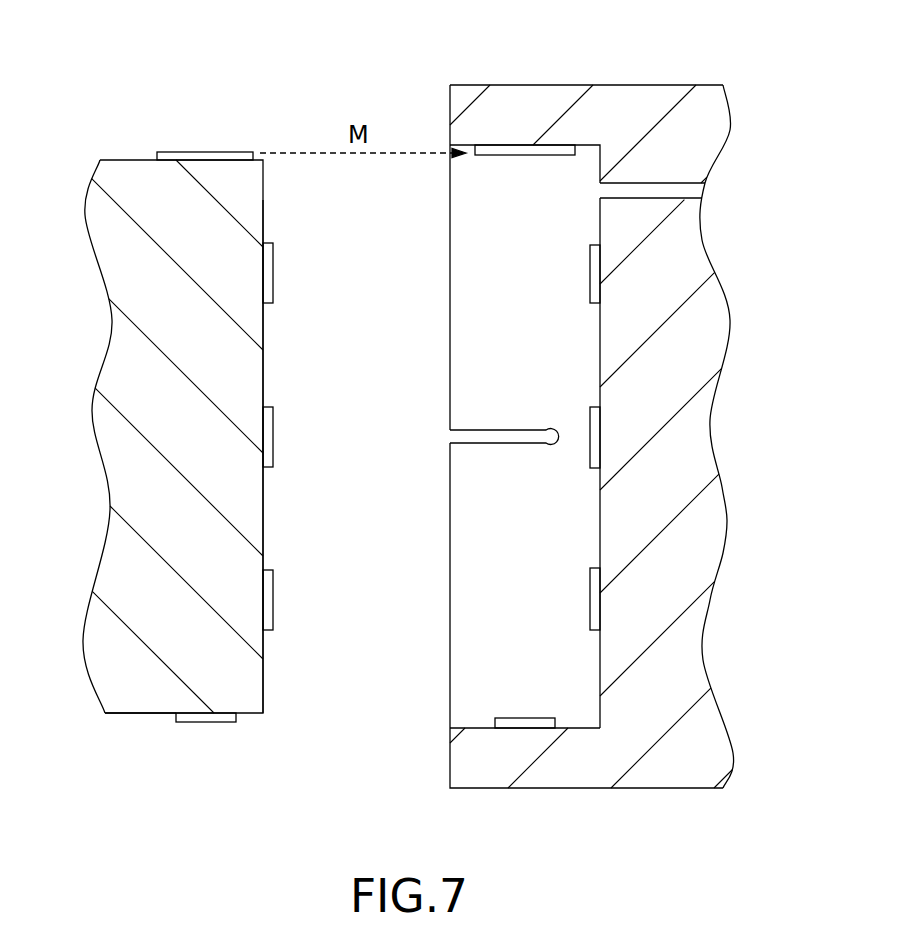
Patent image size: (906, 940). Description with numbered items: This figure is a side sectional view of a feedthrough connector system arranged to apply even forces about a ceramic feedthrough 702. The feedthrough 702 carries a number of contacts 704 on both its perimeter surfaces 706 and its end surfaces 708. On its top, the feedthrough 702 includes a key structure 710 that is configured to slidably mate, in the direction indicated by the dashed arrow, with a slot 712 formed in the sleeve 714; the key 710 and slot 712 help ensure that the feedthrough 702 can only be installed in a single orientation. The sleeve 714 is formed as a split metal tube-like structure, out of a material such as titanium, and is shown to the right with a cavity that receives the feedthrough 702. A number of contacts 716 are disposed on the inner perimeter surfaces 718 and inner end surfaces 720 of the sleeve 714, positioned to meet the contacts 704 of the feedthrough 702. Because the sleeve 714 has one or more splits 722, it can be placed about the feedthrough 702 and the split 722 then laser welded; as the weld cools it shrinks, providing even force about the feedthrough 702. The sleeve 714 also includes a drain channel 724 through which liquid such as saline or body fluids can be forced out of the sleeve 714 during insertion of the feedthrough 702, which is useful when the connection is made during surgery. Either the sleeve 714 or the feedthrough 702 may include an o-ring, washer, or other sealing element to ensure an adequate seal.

The feedthrough 702 is at (117, 452).
The contacts 704 is at (212, 723).
The perimeter surfaces 706 is at (138, 718).
The end surfaces 708 is at (265, 548).
The key structure 710 is at (188, 152).
The slot 712 is at (498, 157).
The sleeve 714 is at (653, 103).
The contacts 716 is at (588, 280).
The inner perimeter surfaces 718 is at (472, 727).
The inner end surfaces 720 is at (598, 537).
The split 722 is at (497, 437).
The drain channel 724 is at (690, 191).